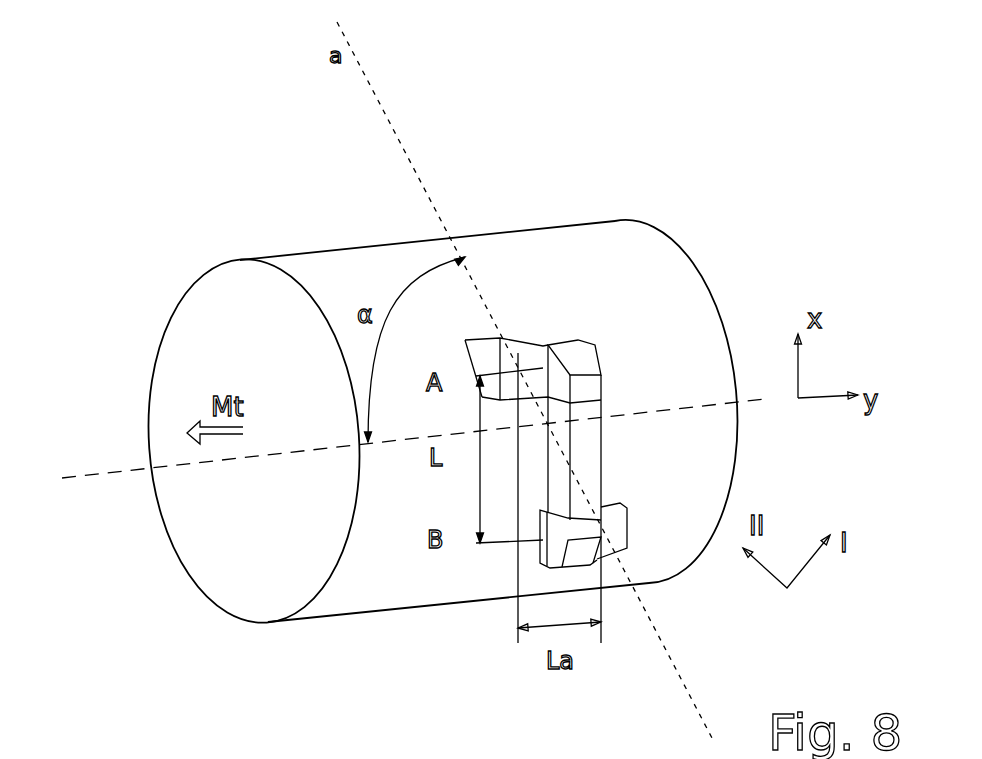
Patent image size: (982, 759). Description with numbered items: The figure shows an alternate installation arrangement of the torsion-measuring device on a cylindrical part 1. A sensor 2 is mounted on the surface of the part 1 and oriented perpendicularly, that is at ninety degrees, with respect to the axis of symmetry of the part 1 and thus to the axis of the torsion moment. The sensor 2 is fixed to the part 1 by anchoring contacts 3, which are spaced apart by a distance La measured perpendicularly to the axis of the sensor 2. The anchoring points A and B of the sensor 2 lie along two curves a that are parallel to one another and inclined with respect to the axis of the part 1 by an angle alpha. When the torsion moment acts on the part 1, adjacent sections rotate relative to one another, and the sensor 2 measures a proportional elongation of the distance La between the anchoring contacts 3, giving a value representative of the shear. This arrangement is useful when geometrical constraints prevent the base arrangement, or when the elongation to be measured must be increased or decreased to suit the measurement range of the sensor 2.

The part 1 is at (667, 268).
The sensor 2 is at (583, 441).
The anchoring contacts 3 is at (540, 344).